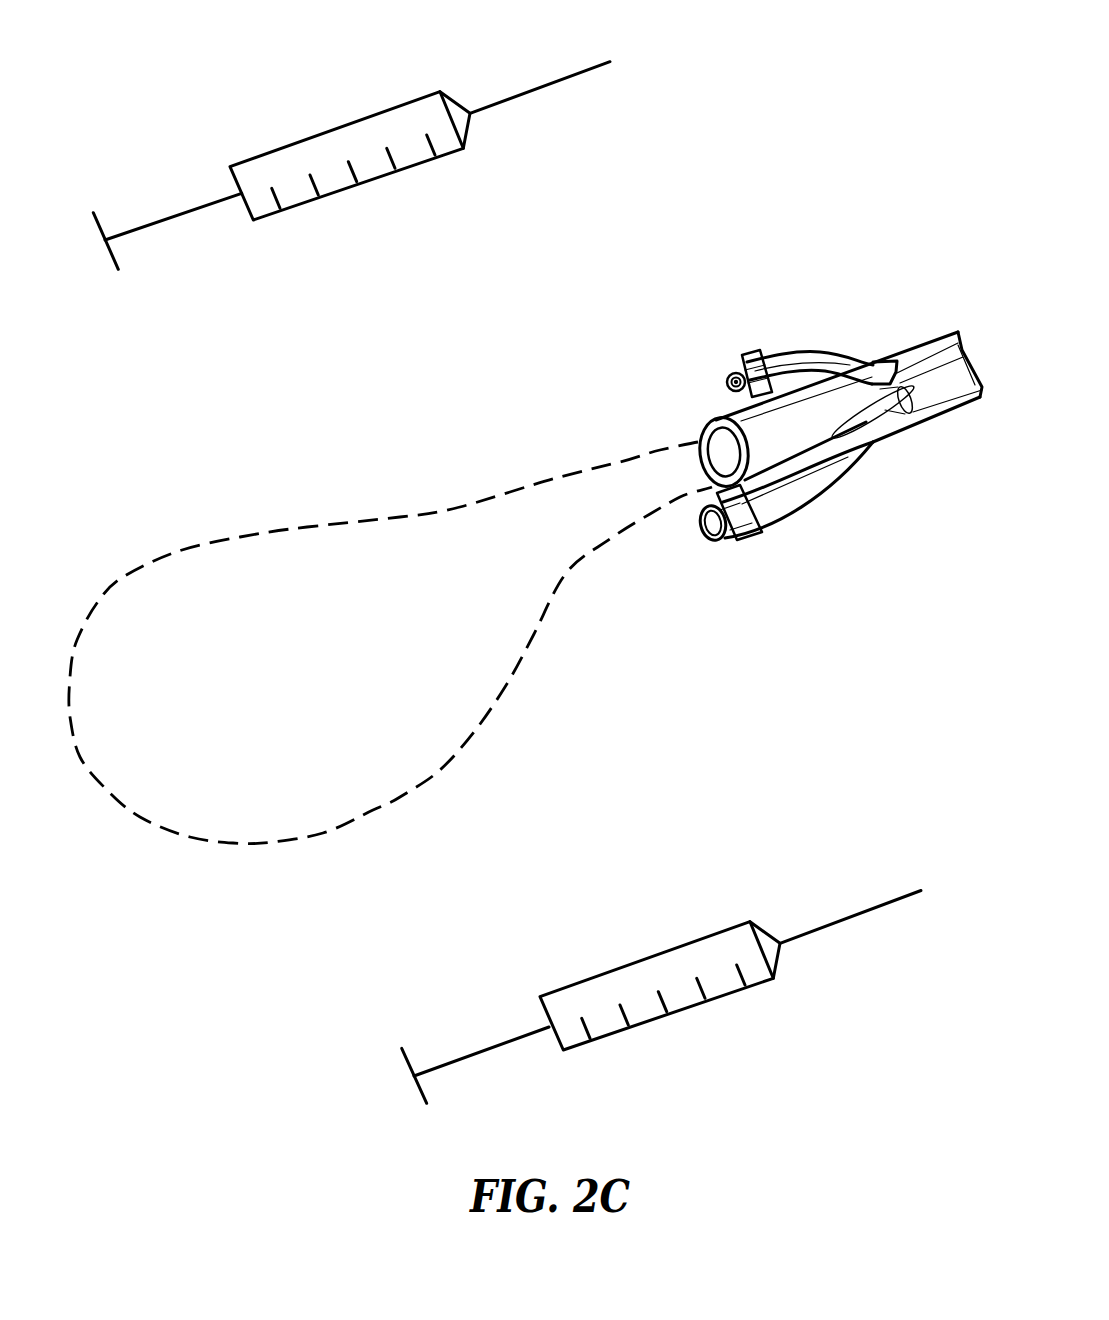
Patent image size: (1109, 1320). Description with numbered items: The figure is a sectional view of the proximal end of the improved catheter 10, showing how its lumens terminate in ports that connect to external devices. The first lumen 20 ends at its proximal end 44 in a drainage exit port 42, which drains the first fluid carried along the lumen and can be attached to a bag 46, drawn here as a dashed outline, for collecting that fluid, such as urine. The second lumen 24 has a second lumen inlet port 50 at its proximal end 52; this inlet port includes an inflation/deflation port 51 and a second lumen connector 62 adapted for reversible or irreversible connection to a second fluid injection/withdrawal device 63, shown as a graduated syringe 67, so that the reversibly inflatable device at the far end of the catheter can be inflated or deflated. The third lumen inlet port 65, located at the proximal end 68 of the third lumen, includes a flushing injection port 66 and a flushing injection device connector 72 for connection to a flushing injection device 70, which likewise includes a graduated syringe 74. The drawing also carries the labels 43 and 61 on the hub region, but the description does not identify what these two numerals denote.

The catheter 10 is at (730, 415).
The first lumen 20 is at (698, 456).
The second lumen 24 is at (813, 360).
The drainage exit port 42 is at (723, 452).
The tube wall opening 43 is at (700, 442).
The proximal end 44 is at (728, 462).
The bag 46 is at (238, 842).
The second lumen inlet port 50 is at (727, 383).
The inflation/deflation port 51 is at (731, 381).
The proximal end 52 is at (731, 378).
The clamp 61 is at (750, 353).
The second lumen connector 62 is at (953, 407).
The second fluid injection/withdrawal device 63 is at (348, 120).
The third lumen inlet port 65 is at (700, 523).
The flushing injection port 66 is at (707, 532).
The graduated syringe 67 is at (351, 149).
The proximal end 68 is at (712, 539).
The flushing injection device 70 is at (661, 979).
The flushing injection device connector 72 is at (750, 537).
The graduated syringe 74 is at (648, 962).